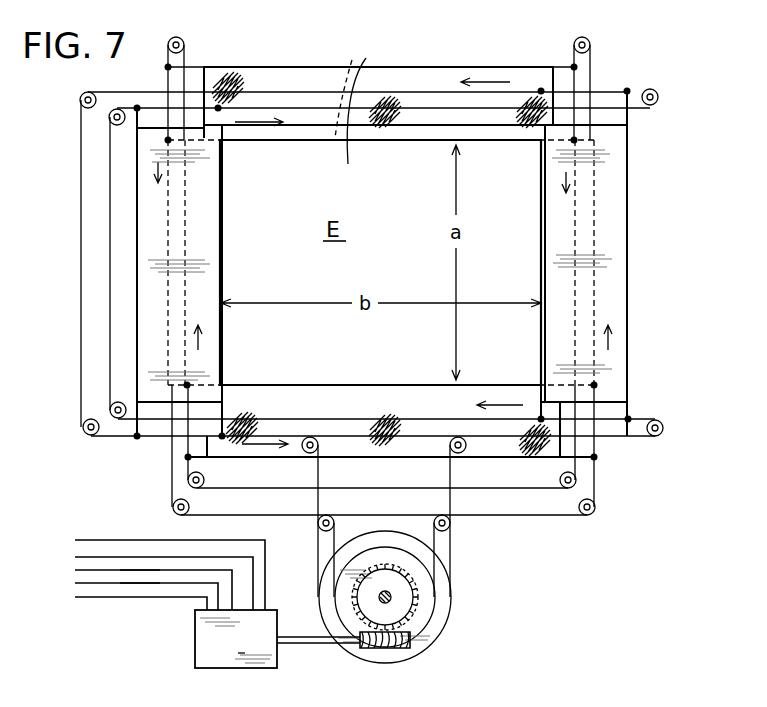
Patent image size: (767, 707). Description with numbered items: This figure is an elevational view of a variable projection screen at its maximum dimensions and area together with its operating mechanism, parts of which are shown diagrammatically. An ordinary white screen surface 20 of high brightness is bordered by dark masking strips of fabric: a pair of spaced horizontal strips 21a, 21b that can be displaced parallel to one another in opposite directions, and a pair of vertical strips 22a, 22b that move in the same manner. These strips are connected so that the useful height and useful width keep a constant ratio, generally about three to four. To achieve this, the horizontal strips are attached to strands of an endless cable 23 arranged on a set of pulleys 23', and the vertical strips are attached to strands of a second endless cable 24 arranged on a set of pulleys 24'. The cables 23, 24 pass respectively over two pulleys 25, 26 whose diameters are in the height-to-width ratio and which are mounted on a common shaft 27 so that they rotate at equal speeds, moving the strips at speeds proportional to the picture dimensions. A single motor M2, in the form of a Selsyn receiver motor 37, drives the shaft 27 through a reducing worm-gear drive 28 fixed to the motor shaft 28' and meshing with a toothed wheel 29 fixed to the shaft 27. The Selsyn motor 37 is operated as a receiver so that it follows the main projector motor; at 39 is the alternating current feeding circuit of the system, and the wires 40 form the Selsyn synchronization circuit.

The white screen surface 20 is at (350, 101).
The horizontal strip 21a is at (410, 80).
The horizontal strip 21b is at (493, 448).
The vertical strip 22a is at (155, 238).
The vertical strip 22b is at (610, 222).
The endless cable 23 is at (392, 318).
The pulleys 23' is at (406, 278).
The endless cable 24 is at (373, 266).
The pulleys 24' is at (377, 282).
The pulley 25 is at (343, 595).
The pulley 26 is at (423, 645).
The shaft 27 is at (395, 600).
The reducing worm-gear drive 28 is at (385, 664).
The motor shaft 28' is at (318, 661).
The toothed wheel 29 is at (415, 580).
The Selsyn receiver motor 37 is at (205, 640).
The alternating current feeding circuit 39 is at (148, 555).
The wires 40 is at (145, 587).
The motor M2 is at (238, 653).